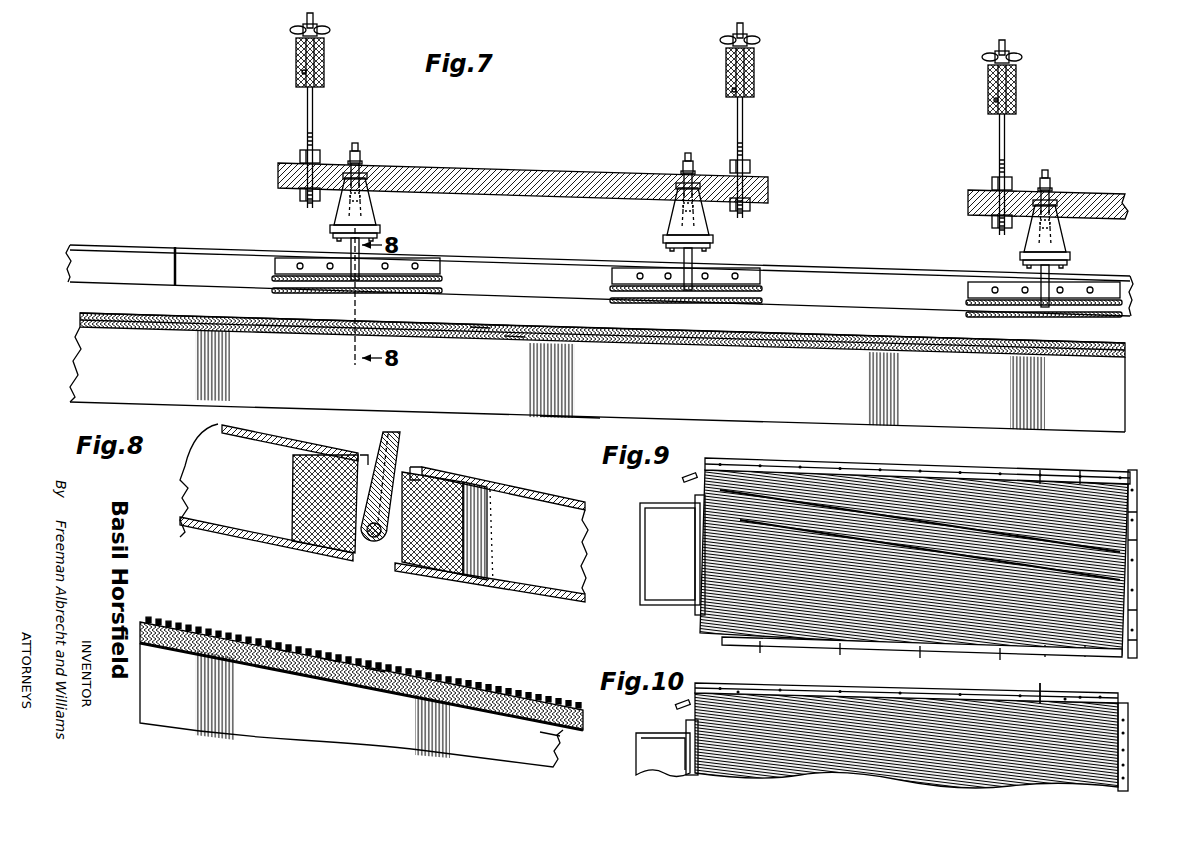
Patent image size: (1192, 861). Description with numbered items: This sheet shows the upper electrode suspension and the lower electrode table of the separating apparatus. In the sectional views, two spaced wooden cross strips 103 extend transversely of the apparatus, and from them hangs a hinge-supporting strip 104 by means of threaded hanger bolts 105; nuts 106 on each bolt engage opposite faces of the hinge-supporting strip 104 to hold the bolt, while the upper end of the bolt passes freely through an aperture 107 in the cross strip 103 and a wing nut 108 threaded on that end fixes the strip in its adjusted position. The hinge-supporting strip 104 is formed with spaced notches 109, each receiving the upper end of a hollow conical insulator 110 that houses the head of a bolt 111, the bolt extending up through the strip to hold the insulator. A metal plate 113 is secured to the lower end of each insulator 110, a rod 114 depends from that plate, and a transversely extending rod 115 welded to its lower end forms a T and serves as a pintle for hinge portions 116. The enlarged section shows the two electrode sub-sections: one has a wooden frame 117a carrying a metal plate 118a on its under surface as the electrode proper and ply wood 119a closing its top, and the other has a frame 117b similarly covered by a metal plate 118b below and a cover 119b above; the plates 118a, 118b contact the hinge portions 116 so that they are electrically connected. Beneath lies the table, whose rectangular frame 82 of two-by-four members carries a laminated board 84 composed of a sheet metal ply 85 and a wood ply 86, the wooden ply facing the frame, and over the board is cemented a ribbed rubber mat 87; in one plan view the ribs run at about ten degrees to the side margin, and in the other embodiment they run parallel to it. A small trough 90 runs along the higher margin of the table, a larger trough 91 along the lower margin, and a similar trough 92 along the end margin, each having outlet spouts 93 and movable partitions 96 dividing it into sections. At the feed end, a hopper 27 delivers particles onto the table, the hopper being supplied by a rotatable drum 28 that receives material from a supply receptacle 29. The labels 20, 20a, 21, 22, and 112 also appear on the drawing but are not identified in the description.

In FIG. 9, the table 20 is at (985, 470).
In FIG. 10, the top frame strip 20a is at (1018, 699).
In FIG. 7, the screen panel 21 is at (578, 328).
In FIG. 8, the screen panel 21 is at (443, 674).
In FIG. 9, the screen panel 21 is at (906, 494).
In FIG. 10, the screen panel 21 is at (899, 694).
In FIG. 8, the panel edge 22 is at (547, 606).
In FIG. 9, the hopper 27 is at (640, 539).
In FIG. 10, the hopper 27 is at (636, 748).
In FIG. 9, the rotatable drum 28 is at (695, 500).
In FIG. 10, the rotatable drum 28 is at (692, 747).
In FIG. 9, the supply receptacle 29 is at (697, 476).
In FIG. 10, the supply receptacle 29 is at (682, 704).
In FIG. 7, the rectangular frame 82 is at (562, 418).
In FIG. 8, the rectangular frame 82 is at (550, 744).
In FIG. 8, the laminated board 84 is at (331, 682).
In FIG. 7, the sheet metal ply 85 is at (478, 331).
In FIG. 8, the sheet metal ply 85 is at (277, 681).
In FIG. 7, the wood ply 86 is at (515, 339).
In FIG. 8, the wood ply 86 is at (376, 690).
In FIG. 7, the rubber mat 87 is at (512, 323).
In FIG. 8, the rubber mat 87 is at (278, 655).
In FIG. 9, the trough 90 is at (965, 651).
In FIG. 9, the trough 91 is at (1042, 470).
In FIG. 9, the trough 92 is at (1134, 478).
In FIG. 10, the trough 92 is at (1128, 752).
In FIG. 9, the outlet spouts 93 is at (1137, 514).
In FIG. 10, the outlet spouts 93 is at (739, 690).
In FIG. 9, the movable partitions 96 is at (1076, 471).
In FIG. 10, the movable partitions 96 is at (1064, 698).
In FIG. 7, the cross strips 103 is at (297, 62).
In FIG. 7, the hinge-supporting strip 104 is at (522, 170).
In FIG. 7, the hanger bolt 105 is at (307, 120).
In FIG. 7, the nuts 106 is at (300, 156).
In FIG. 7, the aperture 107 is at (308, 73).
In FIG. 7, the wing nut 108 is at (322, 30).
In FIG. 7, the notches 109 is at (368, 178).
In FIG. 7, the conical insulator 110 is at (373, 214).
In FIG. 7, the bolt 111 is at (362, 165).
In FIG. 7, the nut 112 is at (350, 152).
In FIG. 7, the metal plate 113 is at (381, 232).
In FIG. 7, the rod 114 is at (350, 245).
In FIG. 8, the rod 114 is at (402, 449).
In FIG. 7, the transversely extending rod 115 is at (432, 276).
In FIG. 8, the transversely extending rod 115 is at (376, 548).
In FIG. 7, the hinge portions 116 is at (275, 266).
In FIG. 8, the hinge portions 116 is at (366, 455).
In FIG. 8, the frame 117a is at (300, 500).
In FIG. 8, the frame 117b is at (452, 528).
In FIG. 8, the metal plate 118a is at (244, 550).
In FIG. 8, the metal plate 118b is at (482, 590).
In FIG. 8, the ply wood 119a is at (316, 442).
In FIG. 7, the cover 119b is at (832, 270).
In FIG. 8, the cover 119b is at (542, 490).